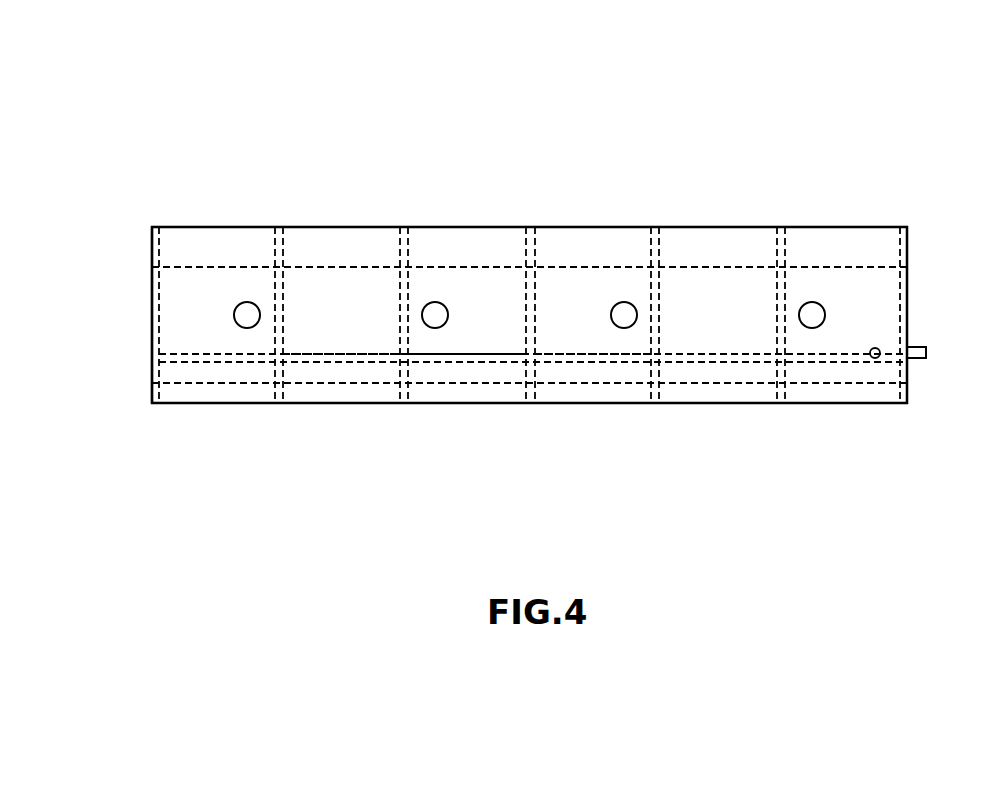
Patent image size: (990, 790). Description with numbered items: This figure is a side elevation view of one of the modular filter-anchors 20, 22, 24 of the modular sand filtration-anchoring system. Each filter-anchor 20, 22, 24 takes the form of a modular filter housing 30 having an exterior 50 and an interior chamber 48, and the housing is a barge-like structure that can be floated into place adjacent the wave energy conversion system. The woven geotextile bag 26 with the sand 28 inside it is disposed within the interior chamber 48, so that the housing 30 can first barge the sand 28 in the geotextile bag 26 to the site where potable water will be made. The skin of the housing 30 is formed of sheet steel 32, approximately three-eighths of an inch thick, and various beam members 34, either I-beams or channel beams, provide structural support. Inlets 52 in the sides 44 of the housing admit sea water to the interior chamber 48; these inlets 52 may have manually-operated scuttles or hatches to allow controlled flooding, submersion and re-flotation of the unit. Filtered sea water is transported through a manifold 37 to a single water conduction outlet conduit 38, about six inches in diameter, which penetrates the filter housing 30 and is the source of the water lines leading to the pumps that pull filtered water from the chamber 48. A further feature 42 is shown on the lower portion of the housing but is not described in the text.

The filter-anchor 20 is at (604, 113).
The filter-anchor 22 is at (529, 315).
The filter-anchor 24 is at (529, 315).
The woven geotextile bag 26 is at (712, 265).
The sand 28 is at (590, 297).
The modular filter housing 30 is at (813, 227).
The sheet steel 32 is at (467, 342).
The beam members 34 is at (700, 390).
The manifold 37 is at (880, 350).
The water conduction outlet conduit 38 is at (915, 358).
The stitch line 42 is at (247, 328).
The sides 44 is at (333, 330).
The interior chamber 48 is at (587, 332).
The exterior 50 is at (175, 328).
The inlet 52 is at (257, 303).